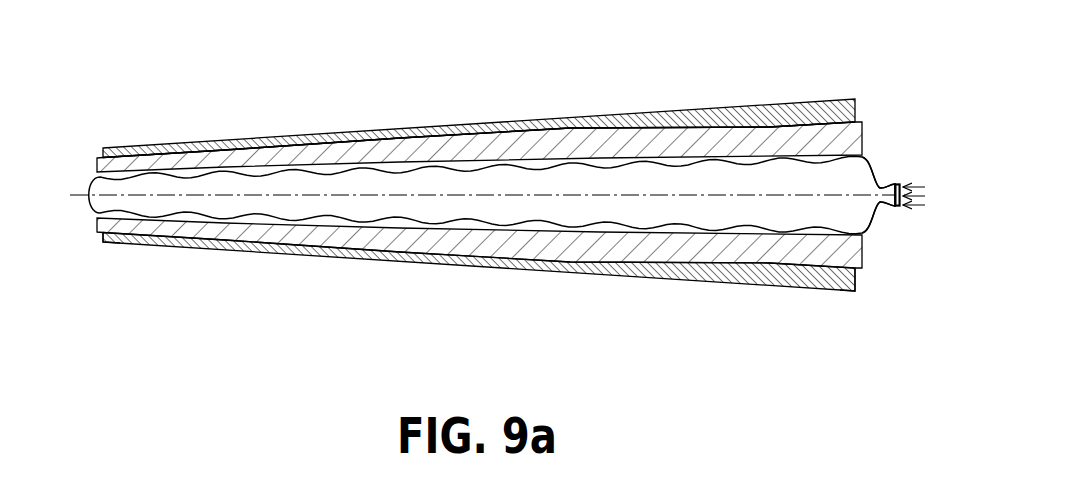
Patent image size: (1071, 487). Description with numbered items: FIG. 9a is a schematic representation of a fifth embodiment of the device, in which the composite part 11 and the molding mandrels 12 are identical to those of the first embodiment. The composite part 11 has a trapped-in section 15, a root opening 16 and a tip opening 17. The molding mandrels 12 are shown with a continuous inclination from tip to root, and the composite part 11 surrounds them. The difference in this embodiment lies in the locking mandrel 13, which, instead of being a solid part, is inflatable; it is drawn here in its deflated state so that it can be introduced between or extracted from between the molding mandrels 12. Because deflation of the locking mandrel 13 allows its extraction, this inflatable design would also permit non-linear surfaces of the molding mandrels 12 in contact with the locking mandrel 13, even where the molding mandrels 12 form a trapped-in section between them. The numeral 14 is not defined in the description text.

The composite part 11 is at (702, 118).
The molding mandrels 12 is at (422, 242).
The locking mandrel 13 is at (868, 172).
The closed tip of core 14 is at (77, 195).
The trapped-in section 15 is at (623, 132).
The root opening 16 is at (873, 258).
The tip opening 17 is at (88, 234).